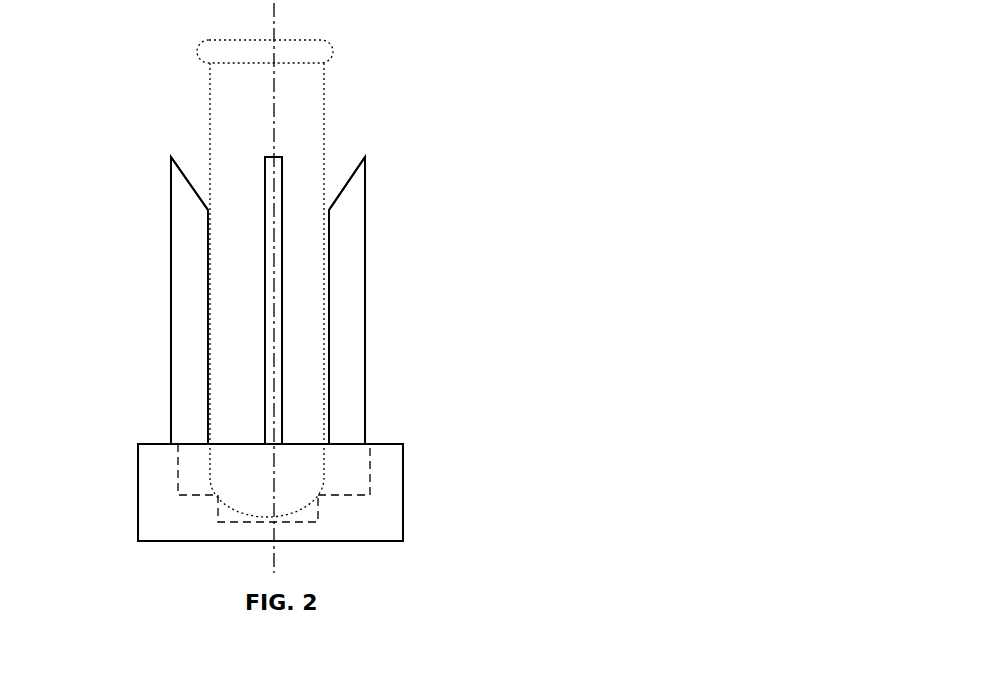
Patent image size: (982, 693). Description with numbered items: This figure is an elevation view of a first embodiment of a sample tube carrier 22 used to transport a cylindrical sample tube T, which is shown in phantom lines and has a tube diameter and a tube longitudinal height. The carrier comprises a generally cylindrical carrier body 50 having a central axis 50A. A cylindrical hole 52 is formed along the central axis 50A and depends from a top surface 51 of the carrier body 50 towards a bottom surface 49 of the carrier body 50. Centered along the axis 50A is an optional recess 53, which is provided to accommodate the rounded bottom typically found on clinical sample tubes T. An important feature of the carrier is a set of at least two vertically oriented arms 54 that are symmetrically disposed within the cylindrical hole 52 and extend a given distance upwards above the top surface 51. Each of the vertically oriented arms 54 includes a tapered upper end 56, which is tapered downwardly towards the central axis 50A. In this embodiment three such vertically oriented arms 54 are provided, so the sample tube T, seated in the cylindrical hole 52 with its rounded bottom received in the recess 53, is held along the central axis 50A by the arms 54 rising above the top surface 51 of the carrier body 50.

The sample tube carrier 22 is at (335, 361).
The bottom surface 49 is at (193, 543).
The carrier body 50 is at (138, 461).
The central axis 50A is at (272, 107).
The top surface 51 is at (153, 443).
The cylindrical hole 52 is at (370, 478).
The recess 53 is at (318, 505).
The vertically oriented arms 54 is at (170, 220).
The tapered upper end 56 is at (192, 190).
The sample tube T is at (325, 97).